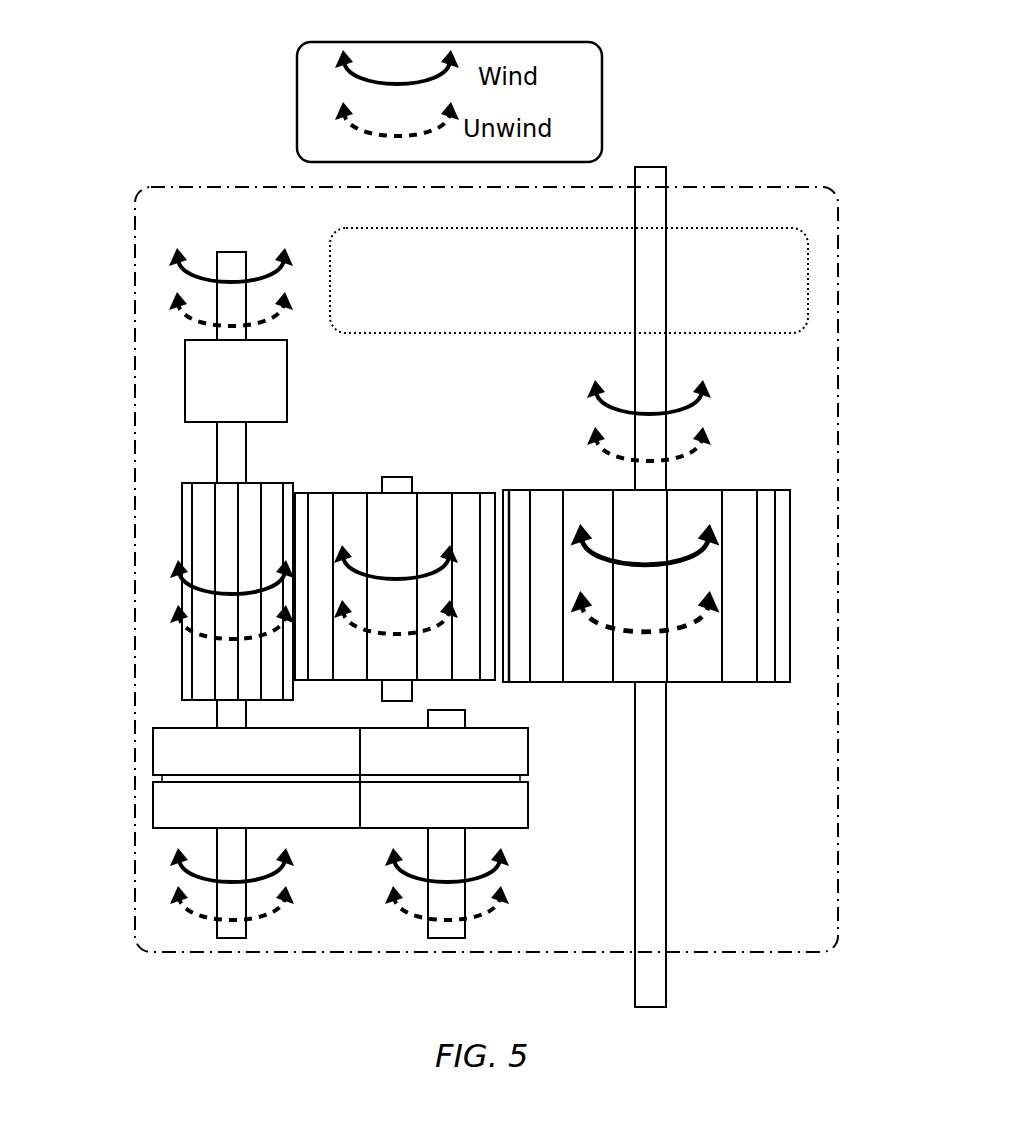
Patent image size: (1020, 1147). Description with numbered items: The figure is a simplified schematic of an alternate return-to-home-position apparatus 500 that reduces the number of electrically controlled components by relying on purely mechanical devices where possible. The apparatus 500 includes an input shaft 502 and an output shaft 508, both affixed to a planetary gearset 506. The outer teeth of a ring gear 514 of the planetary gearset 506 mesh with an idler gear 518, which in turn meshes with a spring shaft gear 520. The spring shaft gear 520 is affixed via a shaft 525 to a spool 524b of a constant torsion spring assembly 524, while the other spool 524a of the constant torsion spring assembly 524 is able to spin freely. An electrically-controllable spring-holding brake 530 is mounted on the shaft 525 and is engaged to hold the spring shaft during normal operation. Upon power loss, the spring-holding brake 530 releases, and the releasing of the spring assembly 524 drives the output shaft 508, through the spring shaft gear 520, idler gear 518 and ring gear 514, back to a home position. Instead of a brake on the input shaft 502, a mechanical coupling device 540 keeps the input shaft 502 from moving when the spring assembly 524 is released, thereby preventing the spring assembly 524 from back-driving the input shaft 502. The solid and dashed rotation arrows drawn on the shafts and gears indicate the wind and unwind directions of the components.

The return-to-home-position apparatus 500 is at (163, 140).
The input shaft 502 is at (650, 166).
The planetary gearset 506 is at (812, 608).
The output shaft 508 is at (652, 1008).
The ring gear 514 is at (790, 666).
The idler gear 518 is at (442, 492).
The spring shaft gear 520 is at (182, 660).
The constant torsion spring assembly 524 is at (335, 866).
The spool 524a is at (528, 830).
The spool 524b is at (162, 793).
The shaft 525 is at (217, 287).
The spring-holding brake 530 is at (185, 378).
The mechanical coupling device 540 is at (347, 334).